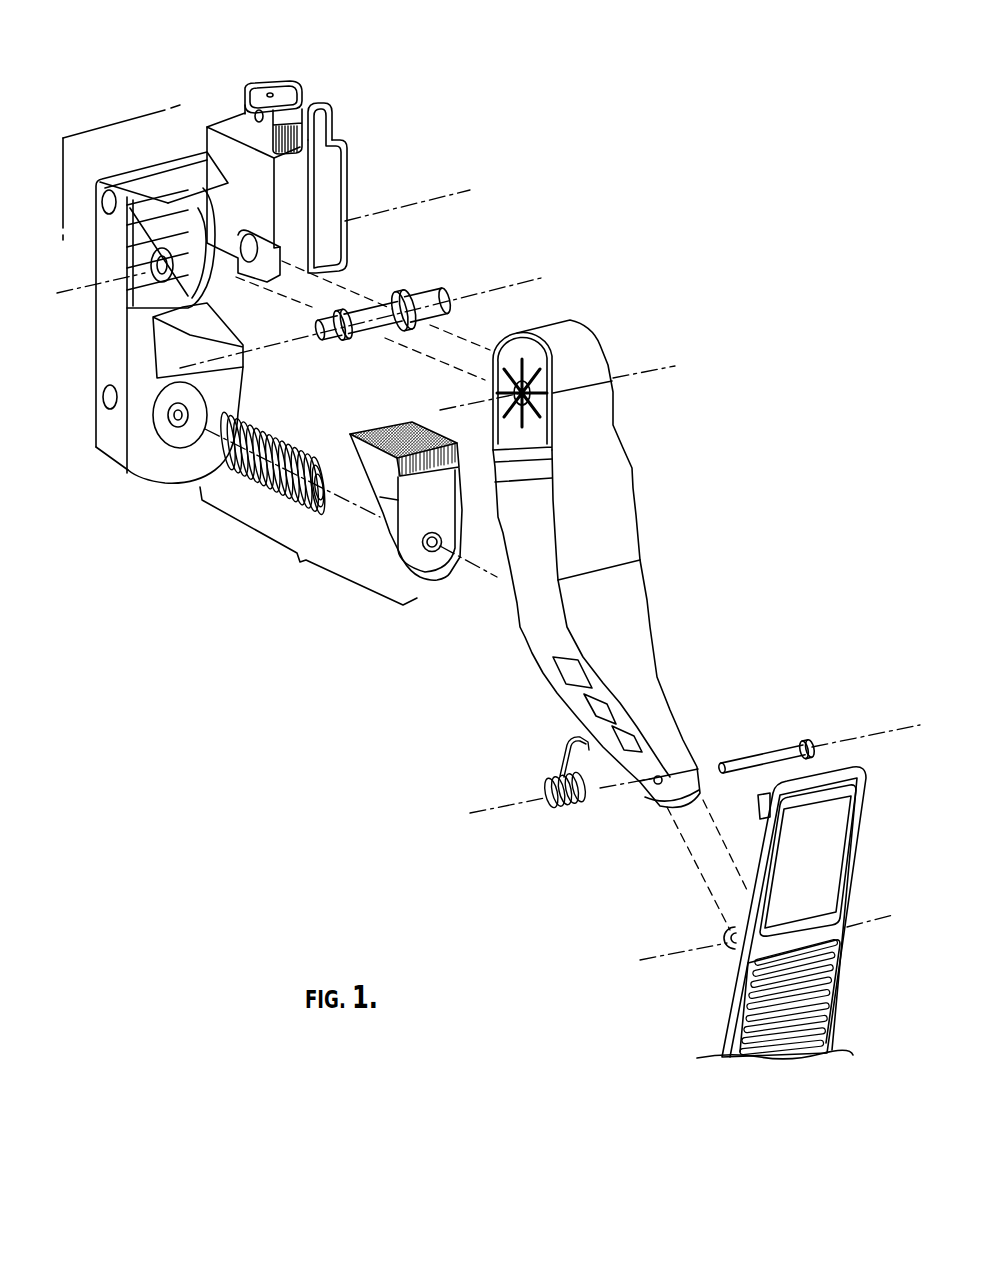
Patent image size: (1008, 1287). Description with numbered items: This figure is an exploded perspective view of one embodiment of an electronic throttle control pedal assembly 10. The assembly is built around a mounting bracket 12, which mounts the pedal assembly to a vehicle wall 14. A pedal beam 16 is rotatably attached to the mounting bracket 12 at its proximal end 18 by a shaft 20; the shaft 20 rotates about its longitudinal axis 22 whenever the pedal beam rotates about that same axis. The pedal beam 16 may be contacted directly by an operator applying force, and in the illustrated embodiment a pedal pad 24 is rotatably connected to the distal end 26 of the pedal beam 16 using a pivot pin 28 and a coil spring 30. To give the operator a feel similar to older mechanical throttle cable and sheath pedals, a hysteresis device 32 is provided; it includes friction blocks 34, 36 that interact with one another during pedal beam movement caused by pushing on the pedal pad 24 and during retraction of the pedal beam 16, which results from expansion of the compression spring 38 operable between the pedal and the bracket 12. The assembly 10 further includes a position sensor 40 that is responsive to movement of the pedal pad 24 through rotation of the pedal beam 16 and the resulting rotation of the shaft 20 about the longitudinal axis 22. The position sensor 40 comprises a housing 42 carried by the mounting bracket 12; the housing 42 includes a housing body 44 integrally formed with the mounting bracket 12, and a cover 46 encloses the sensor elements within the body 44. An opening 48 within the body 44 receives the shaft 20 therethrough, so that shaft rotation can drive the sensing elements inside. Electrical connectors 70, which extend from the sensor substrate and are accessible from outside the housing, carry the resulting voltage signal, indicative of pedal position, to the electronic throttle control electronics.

The electronic throttle control pedal assembly 10 is at (578, 158).
The mounting bracket 12 is at (105, 338).
The vehicle wall 14 is at (98, 169).
The pedal beam 16 is at (635, 530).
The proximal end 18 is at (600, 412).
The shaft 20 is at (420, 290).
The longitudinal axis 22 is at (527, 282).
The pedal pad 24 is at (840, 845).
The distal end 26 is at (665, 722).
The pivot pin 28 is at (777, 742).
The coil spring 30 is at (570, 817).
The hysteresis device 32 is at (297, 556).
The friction block 34 is at (345, 453).
The friction block 36 is at (163, 358).
The compression spring 38 is at (273, 447).
The position sensor 40 is at (362, 116).
The housing 42 is at (213, 120).
The housing body 44 is at (297, 195).
The cover 46 is at (330, 167).
The opening 48 is at (244, 238).
The electrical connectors 70 is at (280, 97).